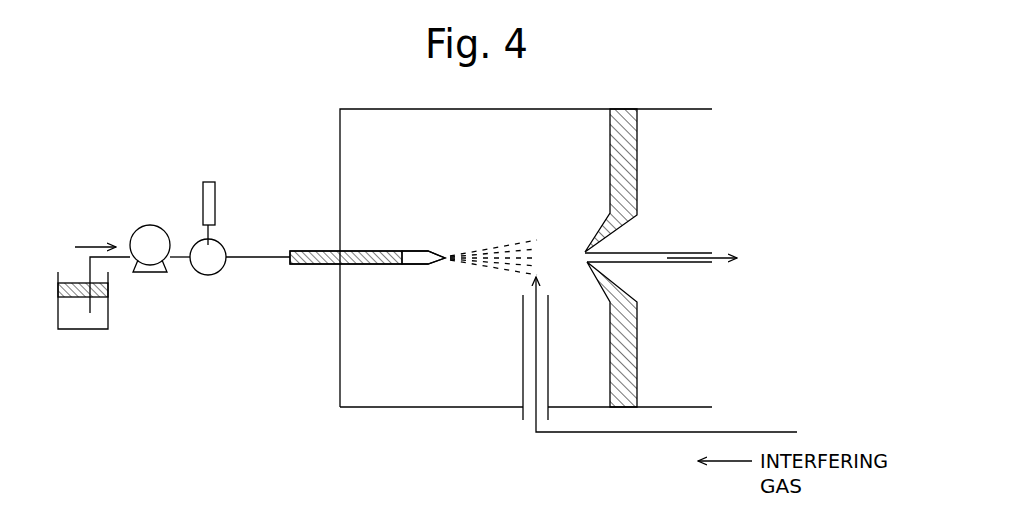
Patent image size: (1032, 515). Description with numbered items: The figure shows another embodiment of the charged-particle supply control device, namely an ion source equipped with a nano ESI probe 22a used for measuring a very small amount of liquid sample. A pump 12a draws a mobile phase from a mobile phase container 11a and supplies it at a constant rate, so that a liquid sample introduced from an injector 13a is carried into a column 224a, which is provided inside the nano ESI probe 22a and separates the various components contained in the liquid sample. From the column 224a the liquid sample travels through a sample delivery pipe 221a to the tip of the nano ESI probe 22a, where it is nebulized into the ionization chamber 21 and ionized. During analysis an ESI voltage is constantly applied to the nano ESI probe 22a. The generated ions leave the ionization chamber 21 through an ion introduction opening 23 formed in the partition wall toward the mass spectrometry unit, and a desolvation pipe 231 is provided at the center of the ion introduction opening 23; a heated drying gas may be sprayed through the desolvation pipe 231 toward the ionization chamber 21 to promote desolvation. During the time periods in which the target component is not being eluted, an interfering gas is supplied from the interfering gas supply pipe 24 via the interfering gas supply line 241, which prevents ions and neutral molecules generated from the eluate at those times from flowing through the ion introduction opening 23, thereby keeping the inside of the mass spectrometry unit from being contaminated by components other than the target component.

The mobile phase container 11a is at (88, 330).
The pump 12a is at (147, 273).
The injector 13a is at (205, 276).
The ionization chamber 21 is at (365, 408).
The nano ESI probe 22a is at (377, 262).
The column 224a is at (305, 266).
The sample delivery pipe 221a is at (418, 254).
The ion introduction opening 23 is at (580, 251).
The desolvation pipe 231 is at (662, 252).
The interfering gas supply pipe 24 is at (522, 357).
The interfering gas supply line 241 is at (723, 431).